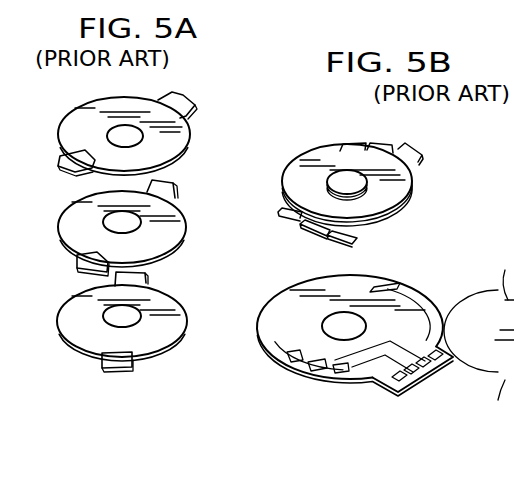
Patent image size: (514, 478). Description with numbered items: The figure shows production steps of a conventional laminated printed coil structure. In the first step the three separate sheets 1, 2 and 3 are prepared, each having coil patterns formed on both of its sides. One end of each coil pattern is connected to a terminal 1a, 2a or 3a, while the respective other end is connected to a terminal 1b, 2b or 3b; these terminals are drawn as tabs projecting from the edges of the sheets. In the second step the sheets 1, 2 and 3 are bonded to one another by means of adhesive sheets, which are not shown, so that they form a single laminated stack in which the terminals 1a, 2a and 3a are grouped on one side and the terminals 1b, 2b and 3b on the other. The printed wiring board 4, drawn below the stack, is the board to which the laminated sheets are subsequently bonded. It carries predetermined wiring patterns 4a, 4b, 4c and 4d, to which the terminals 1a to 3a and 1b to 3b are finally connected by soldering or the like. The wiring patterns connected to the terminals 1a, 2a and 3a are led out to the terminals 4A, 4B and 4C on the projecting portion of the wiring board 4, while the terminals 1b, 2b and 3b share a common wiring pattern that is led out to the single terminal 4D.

In FIG. 5A, the sheet 1 is at (190, 136).
In FIG. 5B, the sheet 1 is at (398, 232).
In FIG. 5A, the terminal 1a is at (58, 170).
In FIG. 5B, the terminal 1a is at (280, 211).
In FIG. 5A, the terminal 1b is at (178, 98).
In FIG. 5B, the terminal 1b is at (416, 153).
In FIG. 5A, the sheet 2 is at (182, 226).
In FIG. 5B, the sheet 2 is at (347, 202).
In FIG. 5A, the terminal 2a is at (80, 270).
In FIG. 5B, the terminal 2a is at (305, 231).
In FIG. 5A, the terminal 2b is at (165, 186).
In FIG. 5B, the terminal 2b is at (382, 145).
In FIG. 5A, the sheet 3 is at (182, 320).
In FIG. 5B, the sheet 3 is at (347, 206).
In FIG. 5A, the terminal 3a is at (100, 362).
In FIG. 5B, the terminal 3a is at (338, 241).
In FIG. 5A, the terminal 3b is at (146, 276).
In FIG. 5B, the terminal 3b is at (353, 143).
In FIG. 5B, the printed wiring board 4 is at (426, 305).
In FIG. 5B, the wiring pattern 4a is at (288, 352).
In FIG. 5B, the wiring pattern 4b is at (308, 368).
In FIG. 5B, the wiring pattern 4c is at (341, 374).
In FIG. 5B, the wiring pattern 4d is at (395, 284).
In FIG. 5B, the terminal 4A is at (432, 364).
In FIG. 5B, the terminal 4B is at (413, 376).
In FIG. 5B, the terminal 4C is at (399, 383).
In FIG. 5B, the terminal 4D is at (438, 352).